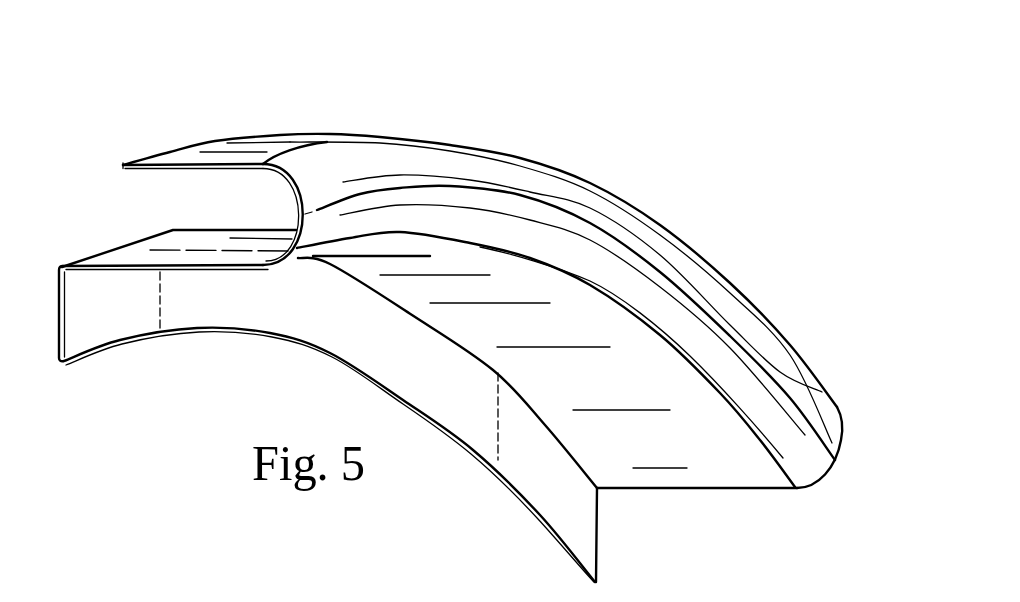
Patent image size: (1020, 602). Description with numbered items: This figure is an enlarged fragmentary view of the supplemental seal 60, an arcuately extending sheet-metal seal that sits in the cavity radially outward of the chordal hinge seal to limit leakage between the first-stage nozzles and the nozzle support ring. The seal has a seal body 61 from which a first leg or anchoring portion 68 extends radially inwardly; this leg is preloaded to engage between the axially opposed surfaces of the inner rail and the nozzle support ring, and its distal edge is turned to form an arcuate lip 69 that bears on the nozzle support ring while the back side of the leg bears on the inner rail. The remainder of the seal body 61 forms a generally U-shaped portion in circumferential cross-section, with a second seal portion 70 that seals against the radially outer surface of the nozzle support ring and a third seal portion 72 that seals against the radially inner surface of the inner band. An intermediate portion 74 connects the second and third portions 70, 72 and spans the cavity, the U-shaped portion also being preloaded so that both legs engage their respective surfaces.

The supplemental seal 60 is at (165, 126).
The seal body 61 is at (620, 398).
The first leg or anchoring portion 68 is at (80, 300).
The arcuate lip 69 is at (137, 340).
The second seal portion 70 is at (167, 247).
The third seal portion 72 is at (247, 152).
The intermediate portion 74 is at (377, 191).